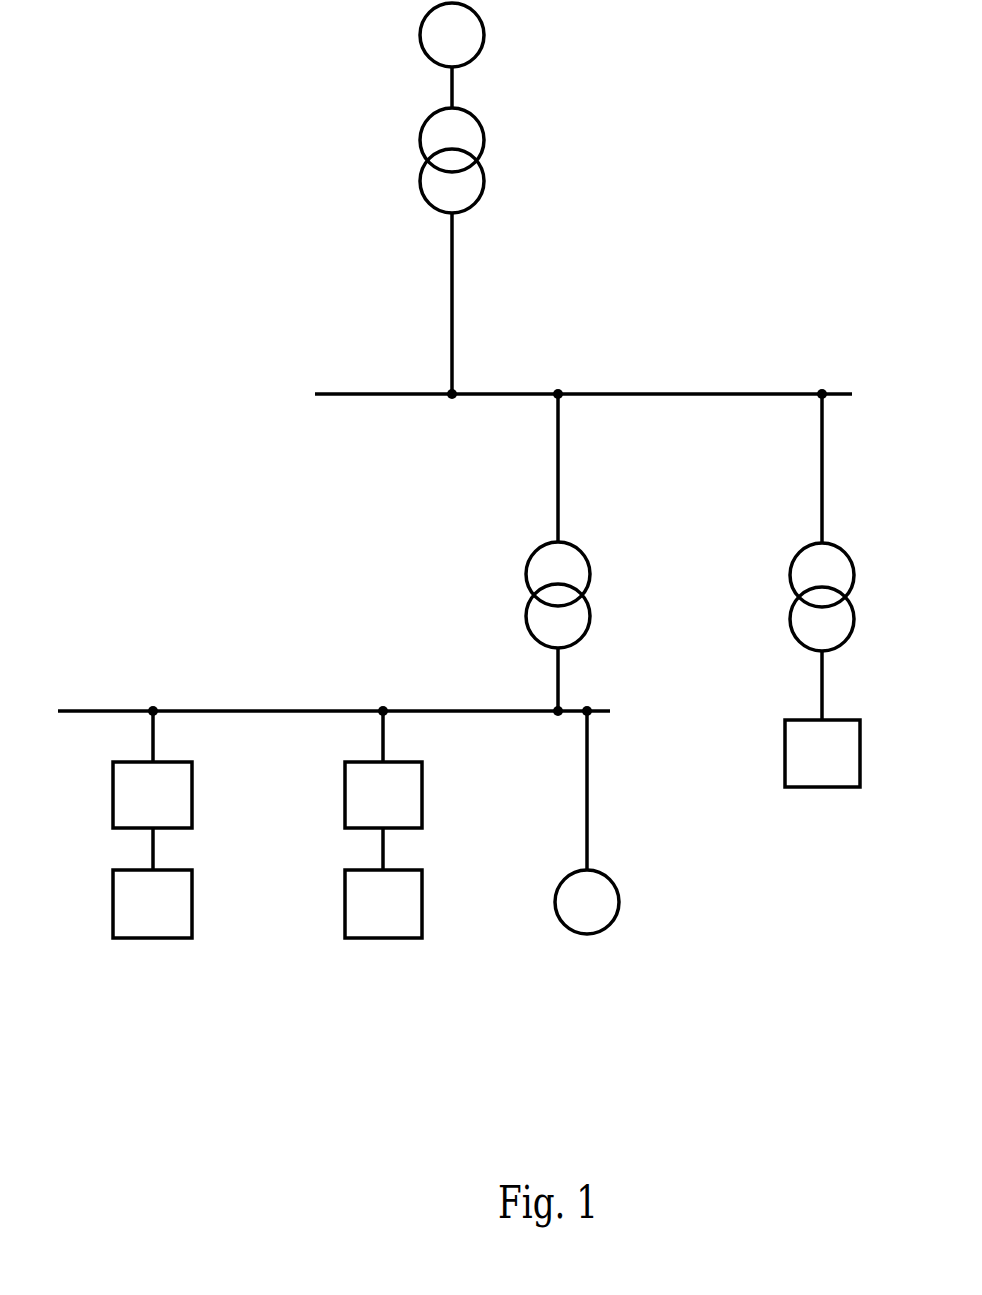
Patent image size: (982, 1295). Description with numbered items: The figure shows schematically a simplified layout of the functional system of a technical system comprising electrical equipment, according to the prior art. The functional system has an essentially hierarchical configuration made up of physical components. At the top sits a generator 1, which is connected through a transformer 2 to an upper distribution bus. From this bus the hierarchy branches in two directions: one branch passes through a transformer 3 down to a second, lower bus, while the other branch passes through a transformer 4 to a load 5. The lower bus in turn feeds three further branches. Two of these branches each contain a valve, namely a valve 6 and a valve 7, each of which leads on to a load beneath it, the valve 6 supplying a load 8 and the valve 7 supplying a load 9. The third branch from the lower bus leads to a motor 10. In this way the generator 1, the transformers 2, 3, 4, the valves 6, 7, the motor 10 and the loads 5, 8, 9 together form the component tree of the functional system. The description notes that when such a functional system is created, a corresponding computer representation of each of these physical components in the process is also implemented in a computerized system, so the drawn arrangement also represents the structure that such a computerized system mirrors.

The generator 1 is at (418, 46).
The transformer 2 is at (415, 181).
The transformer 3 is at (592, 572).
The transformer 4 is at (856, 576).
The load 5 is at (862, 761).
The valve 6 is at (112, 793).
The valve 7 is at (344, 798).
The load 8 is at (112, 903).
The load 9 is at (344, 903).
The motor 10 is at (619, 910).